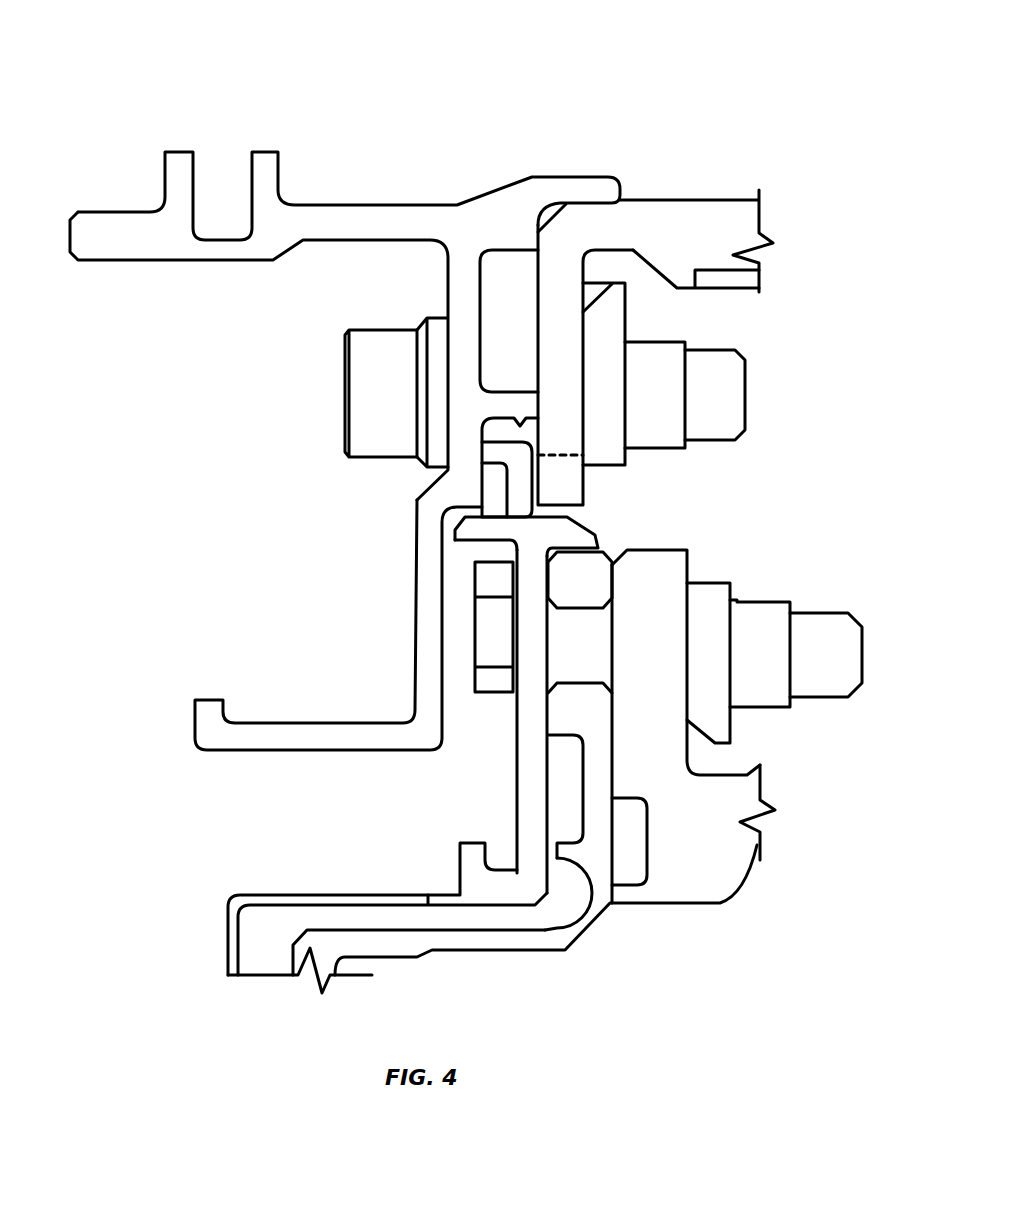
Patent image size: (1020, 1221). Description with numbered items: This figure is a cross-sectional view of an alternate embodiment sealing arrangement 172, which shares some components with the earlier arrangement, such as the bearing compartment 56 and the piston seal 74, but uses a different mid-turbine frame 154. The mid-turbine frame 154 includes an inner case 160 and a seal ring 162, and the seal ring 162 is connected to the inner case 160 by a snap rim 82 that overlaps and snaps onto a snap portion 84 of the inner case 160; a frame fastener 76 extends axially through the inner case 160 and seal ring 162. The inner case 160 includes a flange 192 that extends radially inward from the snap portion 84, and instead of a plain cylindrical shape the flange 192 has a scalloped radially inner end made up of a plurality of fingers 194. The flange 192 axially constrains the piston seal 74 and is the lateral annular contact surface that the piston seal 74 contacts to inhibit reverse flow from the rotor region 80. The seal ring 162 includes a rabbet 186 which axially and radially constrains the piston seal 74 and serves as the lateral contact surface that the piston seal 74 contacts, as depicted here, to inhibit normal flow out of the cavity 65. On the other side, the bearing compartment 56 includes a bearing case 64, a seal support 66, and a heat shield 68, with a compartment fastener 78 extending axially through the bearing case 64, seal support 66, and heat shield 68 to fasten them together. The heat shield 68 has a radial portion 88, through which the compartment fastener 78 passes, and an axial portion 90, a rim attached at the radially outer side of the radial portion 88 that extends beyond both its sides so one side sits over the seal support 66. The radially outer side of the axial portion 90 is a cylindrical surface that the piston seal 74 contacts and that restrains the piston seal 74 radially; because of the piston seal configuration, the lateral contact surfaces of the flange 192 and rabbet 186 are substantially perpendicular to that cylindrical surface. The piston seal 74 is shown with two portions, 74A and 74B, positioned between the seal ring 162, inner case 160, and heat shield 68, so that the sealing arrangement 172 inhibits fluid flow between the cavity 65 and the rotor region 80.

The sealing arrangement 172 is at (730, 102).
The seal ring 162 is at (378, 200).
The snap rim 82 is at (606, 177).
The inner case 160 is at (724, 192).
The mid-turbine frame 154 is at (782, 214).
The snap portion 84 is at (597, 206).
The flange 192 is at (588, 268).
The rabbet 186 is at (525, 427).
The piston seal 74 is at (500, 438).
The first connector portion 74A is at (497, 485).
The second connector portion 74B is at (513, 505).
The fingers 194 is at (583, 483).
The frame fastener 76 is at (746, 352).
The axial portion 90 is at (597, 530).
The cavity 65 is at (772, 527).
The rotor region 80 is at (257, 589).
The radial portion 88 is at (515, 745).
The heat shield 68 is at (508, 815).
The seal support 66 is at (510, 957).
The bearing case 64 is at (718, 868).
The compartment fastener 78 is at (862, 658).
The bearing compartment 56 is at (748, 763).